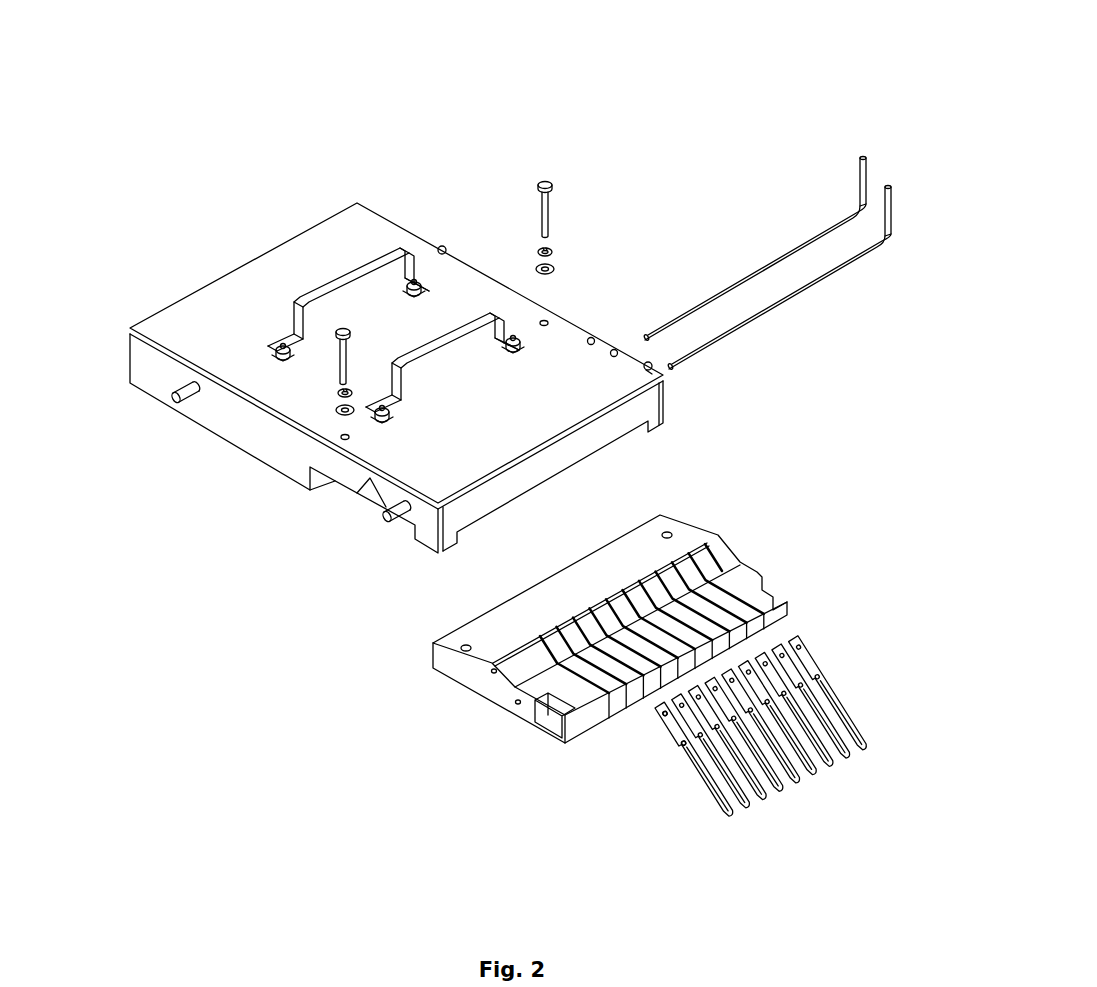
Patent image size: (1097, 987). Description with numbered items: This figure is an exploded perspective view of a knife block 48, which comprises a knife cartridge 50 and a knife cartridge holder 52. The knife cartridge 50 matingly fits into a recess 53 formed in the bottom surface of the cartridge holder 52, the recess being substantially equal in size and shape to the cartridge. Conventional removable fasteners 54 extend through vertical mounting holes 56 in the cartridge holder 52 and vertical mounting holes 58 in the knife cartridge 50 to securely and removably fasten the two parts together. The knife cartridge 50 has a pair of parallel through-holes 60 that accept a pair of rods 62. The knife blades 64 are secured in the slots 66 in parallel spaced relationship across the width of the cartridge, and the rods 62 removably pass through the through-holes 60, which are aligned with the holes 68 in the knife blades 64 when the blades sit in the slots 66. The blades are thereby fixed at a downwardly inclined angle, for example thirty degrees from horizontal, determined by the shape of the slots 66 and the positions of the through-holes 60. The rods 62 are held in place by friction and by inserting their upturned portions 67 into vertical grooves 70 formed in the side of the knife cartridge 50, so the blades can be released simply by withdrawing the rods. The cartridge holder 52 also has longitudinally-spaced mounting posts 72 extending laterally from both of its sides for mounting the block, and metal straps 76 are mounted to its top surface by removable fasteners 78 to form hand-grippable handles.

The knife block 48 is at (731, 88).
The knife cartridge 50 is at (473, 680).
The knife cartridge holder 52 is at (296, 262).
The recess 53 is at (345, 488).
The removable fasteners 54 is at (552, 212).
The vertical mounting holes 56 is at (548, 321).
The vertical mounting holes 58 is at (672, 536).
The through-holes 60 is at (518, 704).
The rods 62 is at (820, 280).
The knife blades 64 is at (814, 767).
The slots 66 is at (590, 628).
The upturned portions 67 is at (893, 204).
The holes 68 is at (687, 745).
The vertical grooves 70 is at (616, 350).
The mounting posts 72 is at (442, 245).
The metal straps 76 is at (369, 262).
The removable fasteners 78 is at (414, 280).